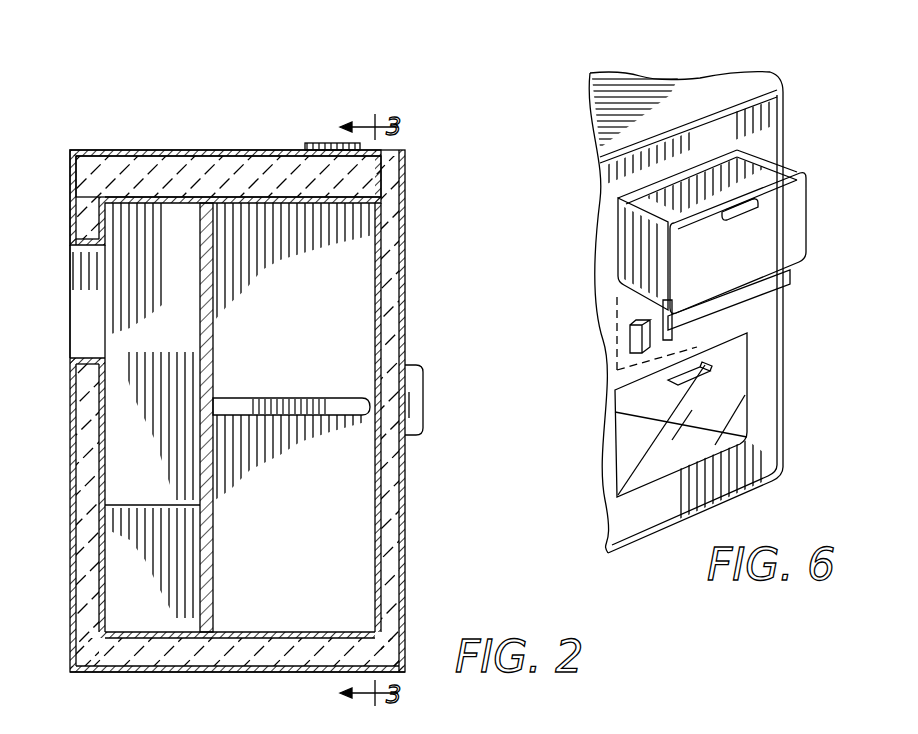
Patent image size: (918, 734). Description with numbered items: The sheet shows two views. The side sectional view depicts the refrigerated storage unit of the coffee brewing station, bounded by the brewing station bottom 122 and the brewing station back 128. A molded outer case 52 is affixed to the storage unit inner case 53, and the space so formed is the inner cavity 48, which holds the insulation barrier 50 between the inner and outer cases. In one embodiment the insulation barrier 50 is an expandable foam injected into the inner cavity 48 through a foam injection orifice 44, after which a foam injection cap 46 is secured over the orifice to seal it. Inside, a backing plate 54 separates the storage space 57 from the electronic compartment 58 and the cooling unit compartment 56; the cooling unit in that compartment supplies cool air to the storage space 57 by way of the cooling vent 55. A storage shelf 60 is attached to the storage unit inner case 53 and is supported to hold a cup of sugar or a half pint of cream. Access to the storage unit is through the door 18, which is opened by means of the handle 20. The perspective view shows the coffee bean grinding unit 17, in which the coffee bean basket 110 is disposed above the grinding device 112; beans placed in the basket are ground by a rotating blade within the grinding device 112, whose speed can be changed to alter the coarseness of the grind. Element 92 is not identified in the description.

In FIG. 6, the coffee bean grinding unit 17 is at (705, 75).
In FIG. 2, the door 18 is at (407, 312).
In FIG. 2, the handle 20 is at (421, 410).
In FIG. 2, the foam injection orifice 44 is at (320, 158).
In FIG. 2, the foam injection cap 46 is at (316, 143).
In FIG. 2, the inner cavity 48 is at (145, 180).
In FIG. 2, the insulation barrier 50 is at (230, 188).
In FIG. 2, the molded outer case 52 is at (245, 150).
In FIG. 2, the storage unit inner case 53 is at (277, 203).
In FIG. 2, the backing plate 54 is at (213, 494).
In FIG. 2, the cooling vent 55 is at (213, 333).
In FIG. 2, the cooling unit compartment 56 is at (168, 349).
In FIG. 2, the storage space 57 is at (321, 548).
In FIG. 2, the electronic compartment 58 is at (171, 587).
In FIG. 2, the storage shelf 60 is at (288, 399).
In FIG. 6, the opening 92 is at (743, 388).
In FIG. 6, the coffee bean basket 110 is at (740, 270).
In FIG. 6, the grinding device 112 is at (745, 300).
In FIG. 2, the brewing station bottom 122 is at (236, 672).
In FIG. 2, the brewing station back 128 is at (70, 172).